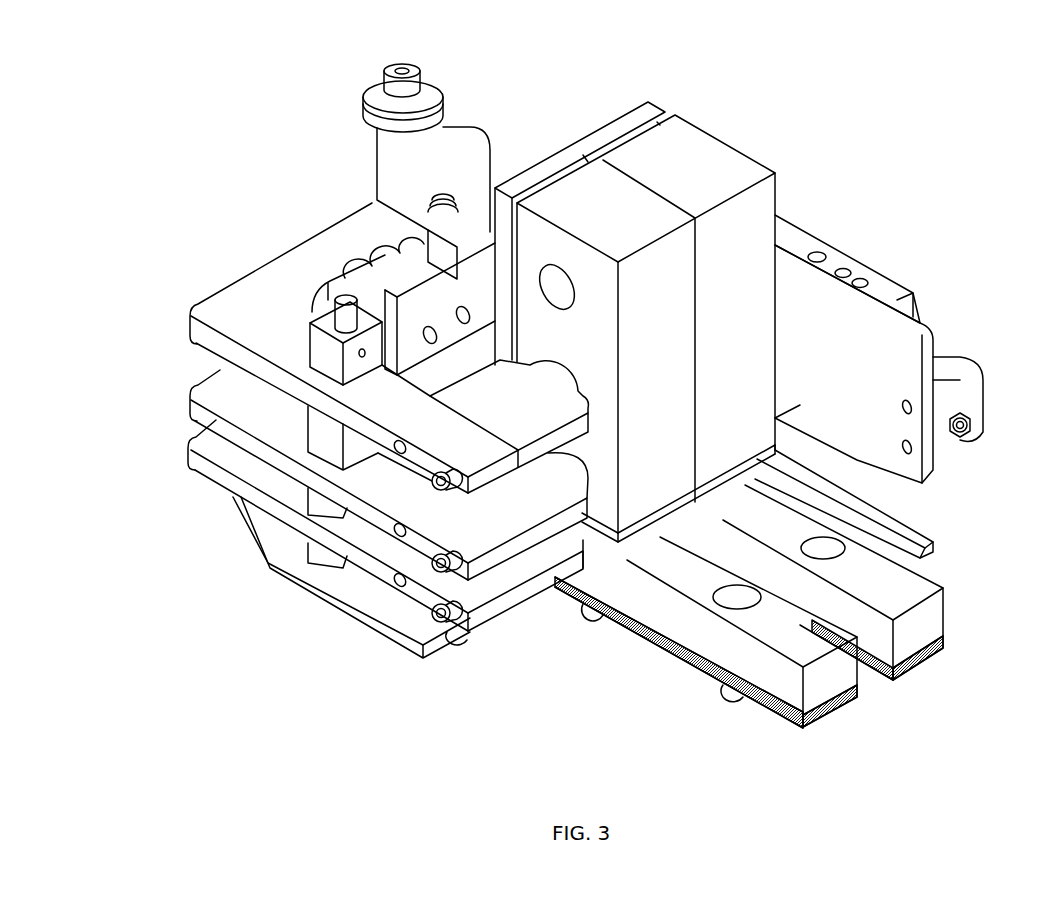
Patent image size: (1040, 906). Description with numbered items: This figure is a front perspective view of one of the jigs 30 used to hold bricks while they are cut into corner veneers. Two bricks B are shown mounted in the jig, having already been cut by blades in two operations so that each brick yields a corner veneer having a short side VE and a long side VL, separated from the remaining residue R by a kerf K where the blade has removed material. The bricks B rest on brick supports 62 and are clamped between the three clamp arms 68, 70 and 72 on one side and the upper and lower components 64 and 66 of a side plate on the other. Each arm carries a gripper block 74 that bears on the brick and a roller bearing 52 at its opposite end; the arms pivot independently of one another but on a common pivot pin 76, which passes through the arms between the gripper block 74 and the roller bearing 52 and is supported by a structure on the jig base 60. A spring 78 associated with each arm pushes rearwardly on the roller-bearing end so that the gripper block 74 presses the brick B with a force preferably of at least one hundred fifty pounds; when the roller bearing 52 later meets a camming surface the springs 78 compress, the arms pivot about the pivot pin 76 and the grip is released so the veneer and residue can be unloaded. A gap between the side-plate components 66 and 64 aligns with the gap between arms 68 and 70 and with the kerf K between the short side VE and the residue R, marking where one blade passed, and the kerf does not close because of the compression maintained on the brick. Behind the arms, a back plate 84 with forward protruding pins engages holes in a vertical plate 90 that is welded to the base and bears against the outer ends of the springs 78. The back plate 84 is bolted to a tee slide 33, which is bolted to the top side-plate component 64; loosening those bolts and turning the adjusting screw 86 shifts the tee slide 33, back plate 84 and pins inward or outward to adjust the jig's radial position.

The jig 30 is at (754, 86).
The tee slide 33 is at (793, 235).
The roller bearing 52 is at (433, 73).
The jig base 60 is at (368, 623).
The brick supports 62 is at (839, 692).
The upper component of sideplate 64 is at (858, 337).
The lower component of sideplate 66 is at (890, 522).
The clamp arm 68 is at (202, 472).
The clamp arm 70 is at (192, 413).
The clamp arm 72 is at (197, 342).
The gripper block 74 is at (519, 408).
The pivot pin 76 is at (340, 298).
The spring 78 is at (433, 212).
The back plate 84 is at (432, 258).
The adjusting screw 86 is at (968, 418).
The vertical plate 90 is at (485, 195).
The brick B is at (689, 170).
The residue R is at (661, 375).
The kerf K is at (657, 122).
The long side of corner veneer VL is at (648, 100).
The short side of corner veneer VE is at (625, 548).